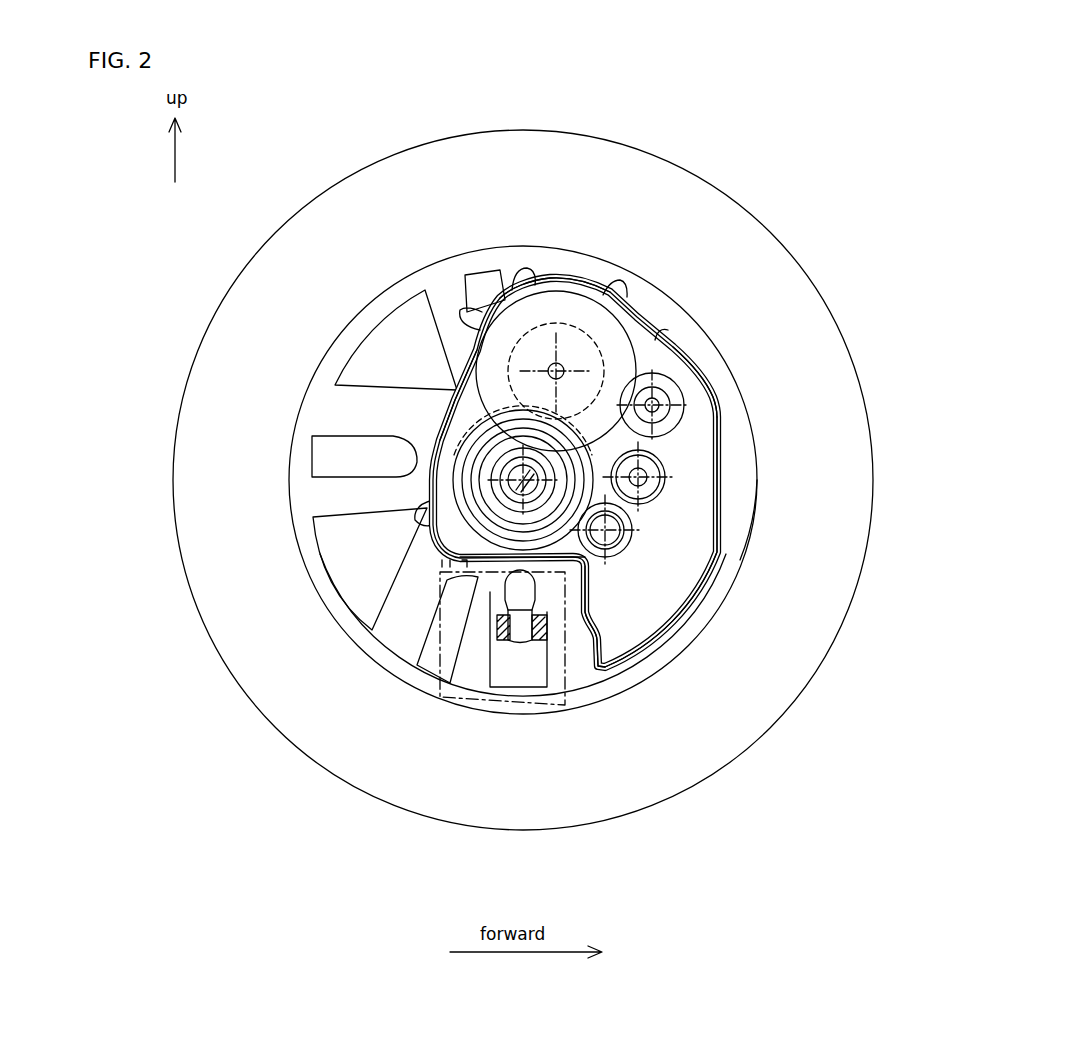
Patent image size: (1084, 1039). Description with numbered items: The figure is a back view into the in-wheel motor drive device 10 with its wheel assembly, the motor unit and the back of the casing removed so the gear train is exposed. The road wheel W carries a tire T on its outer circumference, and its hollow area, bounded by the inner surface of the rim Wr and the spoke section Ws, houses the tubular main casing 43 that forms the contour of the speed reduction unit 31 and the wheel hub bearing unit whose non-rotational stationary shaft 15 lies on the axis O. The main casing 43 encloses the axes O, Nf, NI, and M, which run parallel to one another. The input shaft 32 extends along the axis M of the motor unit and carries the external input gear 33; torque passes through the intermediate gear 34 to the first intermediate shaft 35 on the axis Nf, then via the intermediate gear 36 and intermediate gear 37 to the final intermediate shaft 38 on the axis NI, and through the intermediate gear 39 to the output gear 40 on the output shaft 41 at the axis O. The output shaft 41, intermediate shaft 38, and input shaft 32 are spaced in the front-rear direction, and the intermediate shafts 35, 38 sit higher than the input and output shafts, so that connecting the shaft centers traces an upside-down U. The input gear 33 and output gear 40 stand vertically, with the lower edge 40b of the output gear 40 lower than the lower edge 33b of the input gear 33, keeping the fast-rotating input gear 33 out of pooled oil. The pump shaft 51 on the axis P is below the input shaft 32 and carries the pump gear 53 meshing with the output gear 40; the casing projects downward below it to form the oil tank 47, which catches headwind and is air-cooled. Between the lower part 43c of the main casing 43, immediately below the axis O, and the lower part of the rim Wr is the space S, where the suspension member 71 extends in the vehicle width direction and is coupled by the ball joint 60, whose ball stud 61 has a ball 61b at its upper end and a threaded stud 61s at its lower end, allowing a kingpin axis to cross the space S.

The in-wheel motor drive device 10 is at (658, 303).
The stationary shaft 15 is at (516, 482).
The speed reduction unit 31 is at (455, 398).
The input shaft 32 is at (650, 479).
The input gear 33 is at (665, 468).
The lower edge of input gear 33b is at (632, 533).
The intermediate gear 34 is at (712, 412).
The intermediate shaft 35 is at (683, 392).
The intermediate gear 36 is at (686, 356).
The intermediate gear 37 is at (565, 288).
The intermediate shaft 38 is at (553, 364).
The intermediate gear 39 is at (499, 290).
The output gear 40 is at (466, 457).
The lower edge of output gear 40b is at (482, 578).
The output shaft 41 is at (494, 474).
The main casing 43 is at (628, 318).
The lower part of main casing 43c is at (475, 566).
The oil tank 47 is at (640, 662).
The pump shaft 51 is at (625, 545).
The pump gear 53 is at (620, 628).
The ball joint 60 is at (475, 599).
The ball stud 61 is at (497, 872).
The ball 61b is at (497, 605).
The stud 61s is at (517, 642).
The suspension member 71 is at (540, 642).
The tire T is at (806, 310).
The road wheel W is at (851, 337).
The spoke section Ws is at (430, 530).
The rim Wr is at (752, 513).
The axis Nl NI is at (455, 383).
The axis Nf is at (660, 400).
The axis M is at (650, 490).
The axis P is at (607, 556).
The axis O is at (512, 486).
The space S is at (555, 705).